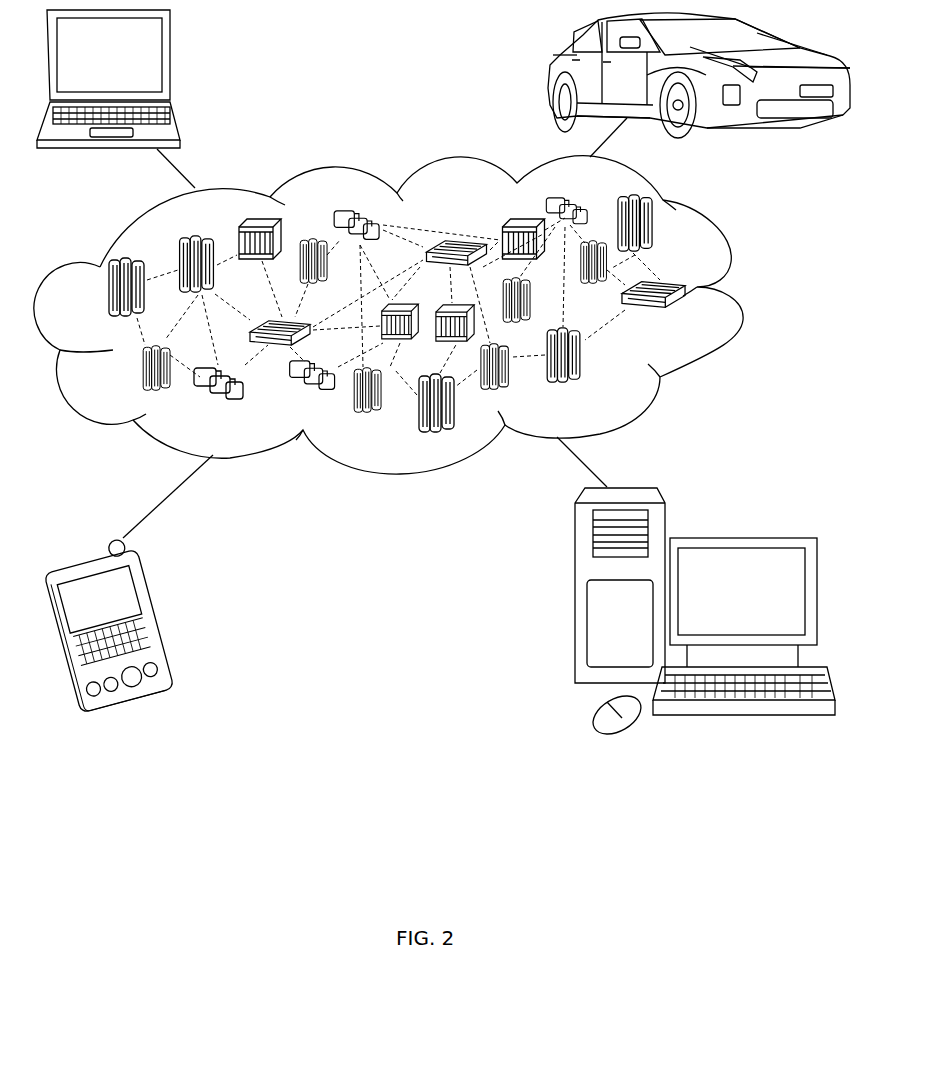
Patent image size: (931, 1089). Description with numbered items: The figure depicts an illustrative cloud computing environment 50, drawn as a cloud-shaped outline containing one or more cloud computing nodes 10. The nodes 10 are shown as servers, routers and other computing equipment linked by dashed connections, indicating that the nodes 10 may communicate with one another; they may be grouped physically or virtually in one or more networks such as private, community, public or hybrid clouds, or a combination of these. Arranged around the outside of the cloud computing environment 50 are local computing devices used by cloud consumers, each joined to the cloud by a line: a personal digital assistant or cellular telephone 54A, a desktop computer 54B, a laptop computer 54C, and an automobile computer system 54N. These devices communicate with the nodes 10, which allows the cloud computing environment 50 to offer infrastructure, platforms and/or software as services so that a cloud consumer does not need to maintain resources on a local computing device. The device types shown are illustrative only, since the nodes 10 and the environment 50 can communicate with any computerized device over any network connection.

The cloud computing nodes 10 is at (690, 320).
The cloud computing environment 50 is at (738, 291).
The personal digital assistant (PDA) or cellular telephone 54A is at (157, 618).
The desktop computer 54B is at (752, 520).
The laptop computer 54C is at (167, 62).
The automobile computer system 54N is at (550, 75).